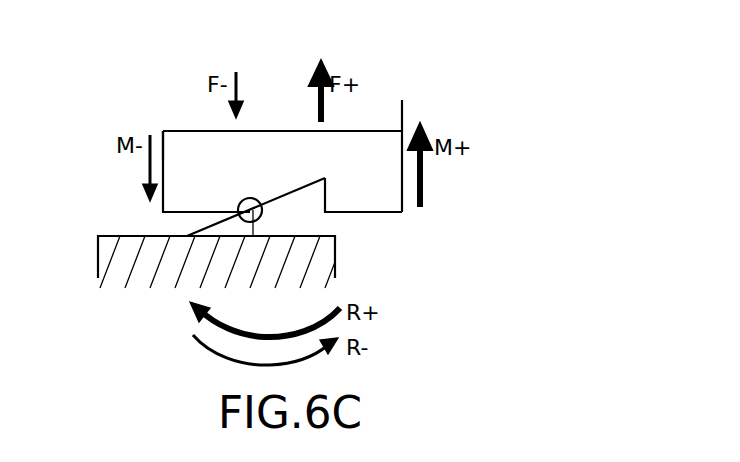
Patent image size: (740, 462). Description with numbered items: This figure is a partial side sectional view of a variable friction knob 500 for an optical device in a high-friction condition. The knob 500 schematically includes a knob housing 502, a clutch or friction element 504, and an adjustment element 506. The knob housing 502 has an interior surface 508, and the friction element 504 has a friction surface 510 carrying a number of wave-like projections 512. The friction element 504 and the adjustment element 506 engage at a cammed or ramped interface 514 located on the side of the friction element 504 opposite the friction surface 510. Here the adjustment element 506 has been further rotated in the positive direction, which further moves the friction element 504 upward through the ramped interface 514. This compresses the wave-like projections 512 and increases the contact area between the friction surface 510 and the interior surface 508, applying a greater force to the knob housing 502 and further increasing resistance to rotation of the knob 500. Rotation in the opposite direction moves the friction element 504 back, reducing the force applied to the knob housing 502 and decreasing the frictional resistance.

The variable friction knob 500 is at (395, 70).
The knob housing 502 is at (213, 125).
The friction element 504 is at (214, 181).
The adjustment element 506 is at (170, 276).
The interior surface 508 is at (386, 136).
The friction surface 510 is at (163, 131).
The wave-like projections 512 is at (358, 133).
The ramped interface 514 is at (262, 214).